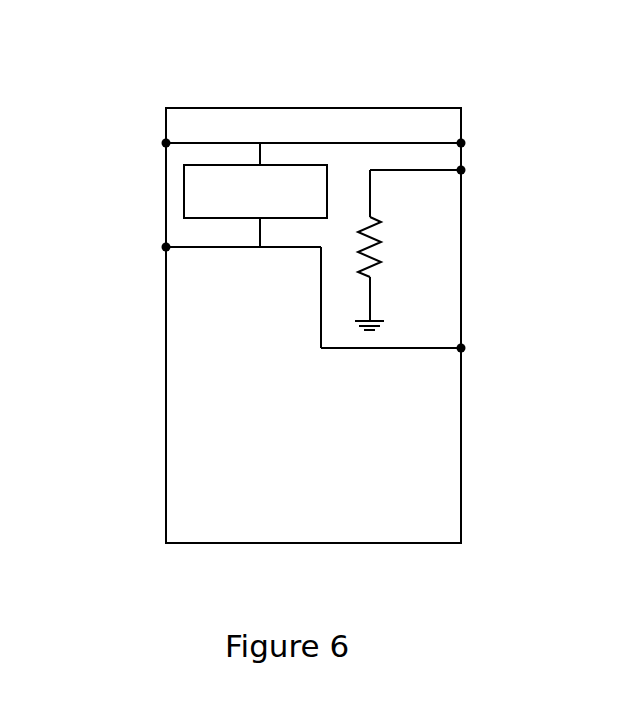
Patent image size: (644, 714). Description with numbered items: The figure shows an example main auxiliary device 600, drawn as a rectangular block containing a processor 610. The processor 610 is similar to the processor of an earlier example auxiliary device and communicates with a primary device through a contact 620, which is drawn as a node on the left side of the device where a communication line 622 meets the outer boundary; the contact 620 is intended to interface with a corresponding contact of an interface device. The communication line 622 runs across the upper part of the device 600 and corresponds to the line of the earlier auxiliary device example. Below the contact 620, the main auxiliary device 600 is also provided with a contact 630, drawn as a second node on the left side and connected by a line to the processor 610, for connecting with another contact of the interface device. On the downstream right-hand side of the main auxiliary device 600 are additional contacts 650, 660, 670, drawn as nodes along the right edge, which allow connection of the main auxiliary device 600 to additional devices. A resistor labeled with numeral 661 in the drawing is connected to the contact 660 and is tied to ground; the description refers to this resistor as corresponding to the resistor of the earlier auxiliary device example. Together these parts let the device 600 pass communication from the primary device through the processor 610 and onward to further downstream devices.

The main auxiliary device 600 is at (368, 89).
The processor 610 is at (220, 165).
The contact 620 is at (166, 143).
The communication line 622 is at (327, 143).
The contact 630 is at (166, 247).
The contact 650 is at (461, 143).
The contact 660 is at (461, 170).
The resistor R2 661 is at (381, 244).
The contact 670 is at (461, 348).